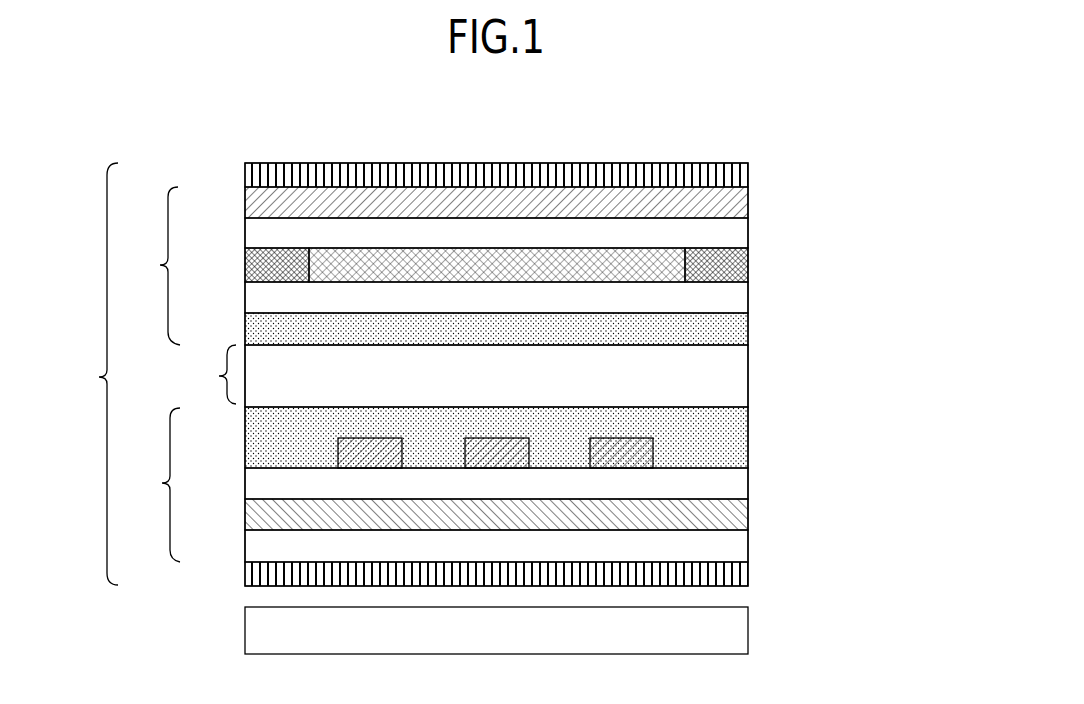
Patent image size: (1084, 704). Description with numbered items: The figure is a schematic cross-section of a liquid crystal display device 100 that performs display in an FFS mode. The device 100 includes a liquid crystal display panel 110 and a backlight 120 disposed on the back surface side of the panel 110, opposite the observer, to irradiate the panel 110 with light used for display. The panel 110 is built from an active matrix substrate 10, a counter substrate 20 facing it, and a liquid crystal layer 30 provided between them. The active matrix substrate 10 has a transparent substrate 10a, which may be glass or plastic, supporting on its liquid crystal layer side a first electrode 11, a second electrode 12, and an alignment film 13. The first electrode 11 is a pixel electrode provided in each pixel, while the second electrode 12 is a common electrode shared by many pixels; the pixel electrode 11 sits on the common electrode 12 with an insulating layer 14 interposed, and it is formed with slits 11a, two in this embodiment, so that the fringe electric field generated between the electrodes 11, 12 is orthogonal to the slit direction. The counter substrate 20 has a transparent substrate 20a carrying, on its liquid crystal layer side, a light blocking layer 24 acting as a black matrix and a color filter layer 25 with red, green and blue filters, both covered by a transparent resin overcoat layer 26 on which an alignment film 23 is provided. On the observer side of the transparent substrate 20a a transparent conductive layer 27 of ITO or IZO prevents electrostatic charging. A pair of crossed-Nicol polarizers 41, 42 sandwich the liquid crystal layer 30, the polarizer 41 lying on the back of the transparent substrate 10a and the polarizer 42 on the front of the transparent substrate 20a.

The liquid crystal display device 100 is at (840, 160).
The liquid crystal display panel 110 is at (85, 374).
The backlight 120 is at (265, 630).
The active matrix substrate 10 is at (152, 485).
The transparent substrate 10a is at (732, 545).
The first electrode 11 is at (640, 455).
The slit 11a is at (436, 452).
The second electrode 12 is at (245, 516).
The alignment film 13 is at (262, 437).
The insulating layer 14 is at (720, 488).
The counter substrate 20 is at (152, 266).
The transparent substrate 20a is at (275, 232).
The alignment film 23 is at (723, 330).
The light blocking layer 24 is at (245, 265).
The color filter layer 25 is at (387, 265).
The overcoat layer 26 is at (723, 298).
The transparent conductive layer 27 is at (245, 201).
The liquid crystal layer 30 is at (466, 376).
The polarizer 41 is at (245, 574).
The polarizer 42 is at (245, 172).